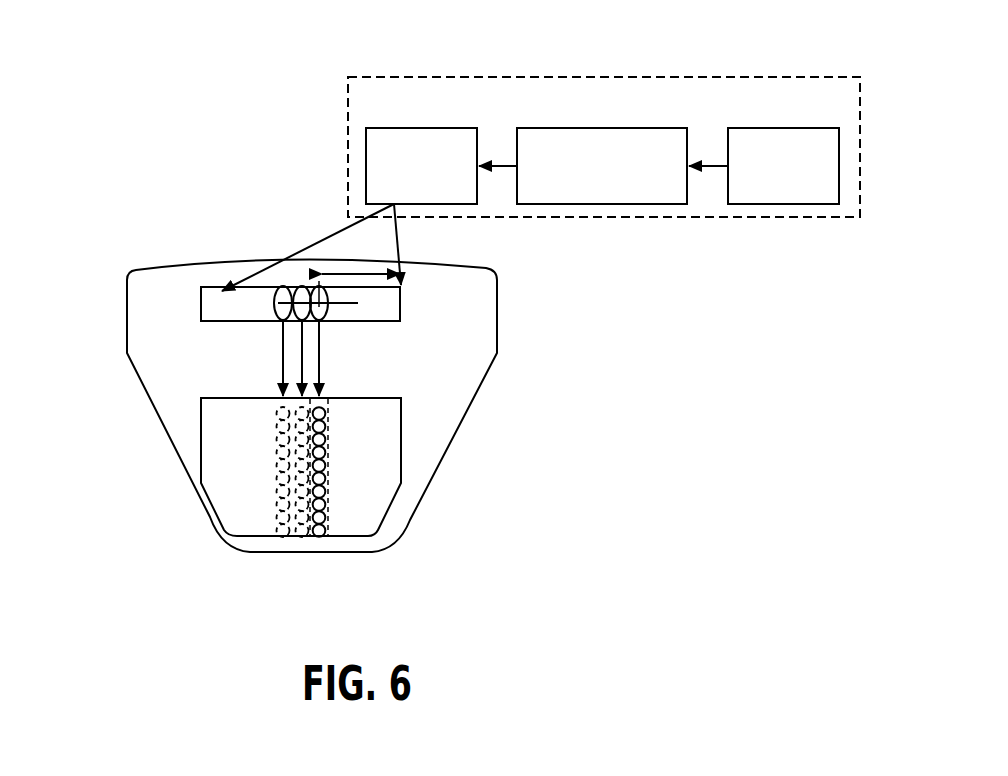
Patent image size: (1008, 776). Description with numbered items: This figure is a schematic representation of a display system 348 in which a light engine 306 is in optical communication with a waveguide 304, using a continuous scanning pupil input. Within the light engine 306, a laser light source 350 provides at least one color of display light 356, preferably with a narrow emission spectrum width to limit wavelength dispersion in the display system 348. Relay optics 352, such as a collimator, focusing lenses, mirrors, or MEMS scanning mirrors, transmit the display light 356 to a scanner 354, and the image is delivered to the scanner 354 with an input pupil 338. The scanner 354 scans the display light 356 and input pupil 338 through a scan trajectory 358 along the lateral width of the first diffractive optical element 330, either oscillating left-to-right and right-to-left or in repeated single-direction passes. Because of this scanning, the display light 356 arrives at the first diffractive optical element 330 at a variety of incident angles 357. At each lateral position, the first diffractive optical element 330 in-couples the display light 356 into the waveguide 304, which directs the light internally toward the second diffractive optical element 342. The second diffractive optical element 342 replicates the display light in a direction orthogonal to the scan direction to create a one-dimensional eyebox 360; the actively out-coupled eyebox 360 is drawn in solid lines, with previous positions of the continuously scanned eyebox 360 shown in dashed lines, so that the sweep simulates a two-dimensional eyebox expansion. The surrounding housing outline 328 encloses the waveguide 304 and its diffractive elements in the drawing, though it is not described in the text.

The display system 348 is at (157, 163).
The waveguide 304 is at (537, 293).
The light engine 306 is at (681, 113).
The laser light source 350 is at (829, 179).
The relay optics 352 is at (618, 192).
The scanner 354 is at (439, 192).
The display light 356 is at (253, 272).
The incident angles 357 is at (291, 285).
The scan trajectory 358 is at (352, 274).
The first diffractive optical element 330 is at (393, 307).
The input pupil 338 is at (323, 323).
The second diffractive optical element 342 is at (390, 457).
The housing 328 is at (233, 507).
The eyebox 360 is at (328, 513).